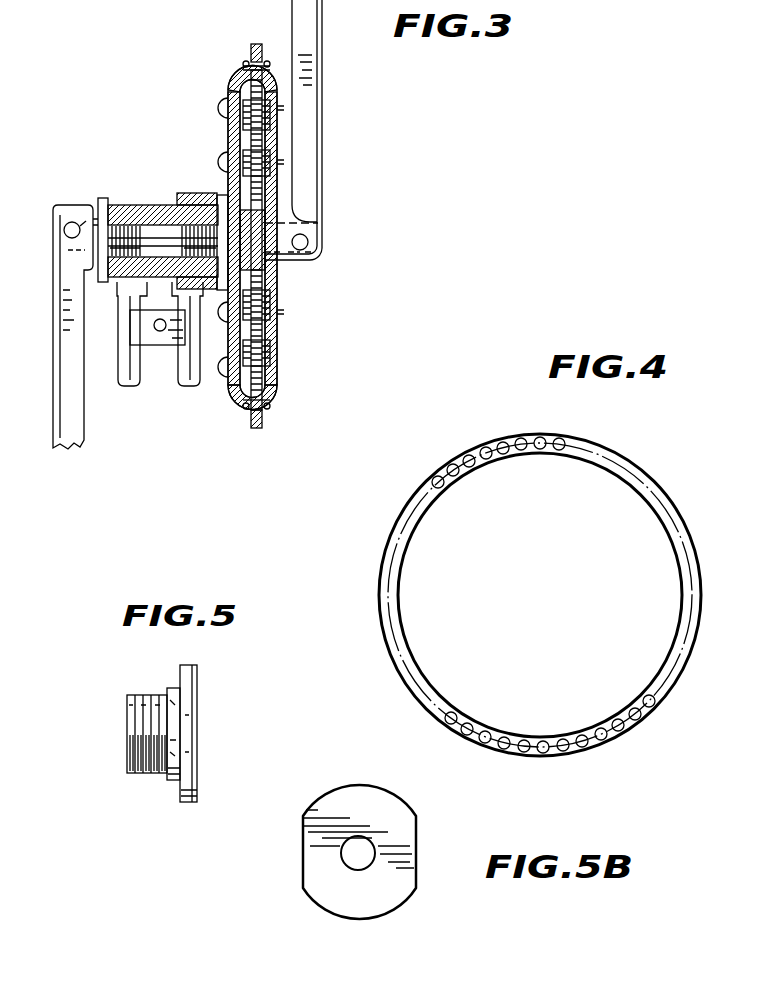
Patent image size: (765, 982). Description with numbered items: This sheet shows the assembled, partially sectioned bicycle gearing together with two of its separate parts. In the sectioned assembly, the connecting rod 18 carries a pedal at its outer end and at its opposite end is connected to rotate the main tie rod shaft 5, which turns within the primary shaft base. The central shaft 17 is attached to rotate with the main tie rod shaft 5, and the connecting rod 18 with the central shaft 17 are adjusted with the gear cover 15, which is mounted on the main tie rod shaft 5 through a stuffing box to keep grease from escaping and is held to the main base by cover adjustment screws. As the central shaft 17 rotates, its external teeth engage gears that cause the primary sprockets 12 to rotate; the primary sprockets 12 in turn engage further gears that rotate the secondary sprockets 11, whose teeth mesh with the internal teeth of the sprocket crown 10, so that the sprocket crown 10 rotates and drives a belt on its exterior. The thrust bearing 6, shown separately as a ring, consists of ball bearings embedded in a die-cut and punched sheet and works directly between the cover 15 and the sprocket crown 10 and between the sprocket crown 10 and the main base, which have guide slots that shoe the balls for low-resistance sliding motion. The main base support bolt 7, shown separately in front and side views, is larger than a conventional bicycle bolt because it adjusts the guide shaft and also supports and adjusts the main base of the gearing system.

In FIG. 3, the main tie rod shaft 5 is at (325, 243).
In FIG. 4, the thrust bearing 6 is at (390, 548).
In FIG. 5, the main base support bolt 7 is at (137, 743).
In FIG. 5B, the main base support bolt 7 is at (392, 830).
In FIG. 3, the sprocket crown 10 is at (251, 56).
In FIG. 3, the secondary sprocket 11 is at (272, 392).
In FIG. 3, the primary sprocket 12 is at (228, 345).
In FIG. 3, the gear cover 15 is at (282, 76).
In FIG. 3, the central shaft 17 is at (262, 226).
In FIG. 3, the connecting rod 18 is at (313, 112).